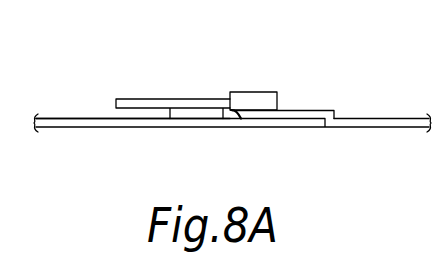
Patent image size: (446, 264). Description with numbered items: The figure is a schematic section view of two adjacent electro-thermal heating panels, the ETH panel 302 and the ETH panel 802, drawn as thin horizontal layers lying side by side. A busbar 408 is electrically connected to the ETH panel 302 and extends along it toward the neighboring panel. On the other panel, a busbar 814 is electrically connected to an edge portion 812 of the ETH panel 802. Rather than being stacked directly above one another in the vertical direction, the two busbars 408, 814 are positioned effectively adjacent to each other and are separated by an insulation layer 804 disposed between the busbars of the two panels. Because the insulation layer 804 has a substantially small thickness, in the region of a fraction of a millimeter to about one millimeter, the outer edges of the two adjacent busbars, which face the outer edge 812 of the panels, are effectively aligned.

The ETH panel 302 is at (78, 120).
The busbar 408 is at (203, 103).
The ETH panel 802 is at (392, 124).
The insulation layer 804 is at (276, 127).
The edge portion 812 is at (243, 122).
The busbar 814 is at (255, 100).